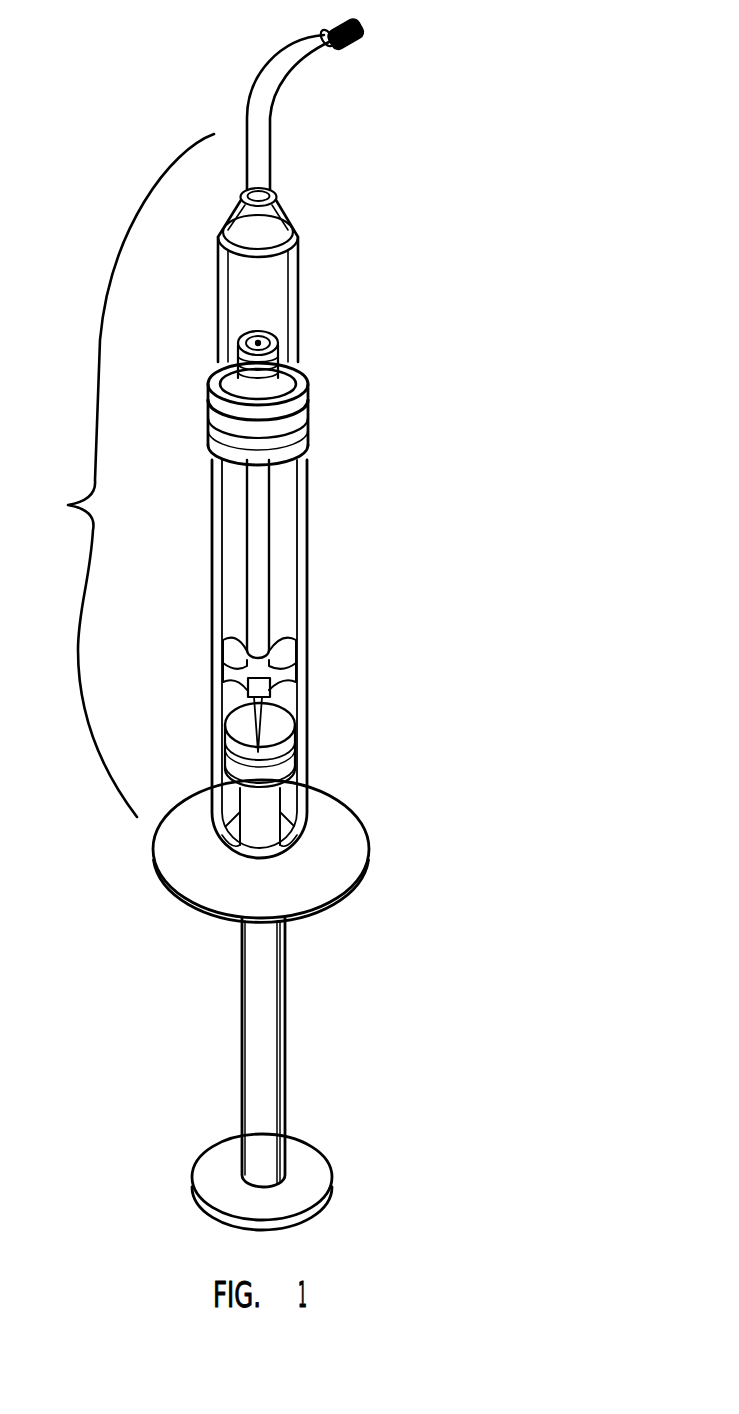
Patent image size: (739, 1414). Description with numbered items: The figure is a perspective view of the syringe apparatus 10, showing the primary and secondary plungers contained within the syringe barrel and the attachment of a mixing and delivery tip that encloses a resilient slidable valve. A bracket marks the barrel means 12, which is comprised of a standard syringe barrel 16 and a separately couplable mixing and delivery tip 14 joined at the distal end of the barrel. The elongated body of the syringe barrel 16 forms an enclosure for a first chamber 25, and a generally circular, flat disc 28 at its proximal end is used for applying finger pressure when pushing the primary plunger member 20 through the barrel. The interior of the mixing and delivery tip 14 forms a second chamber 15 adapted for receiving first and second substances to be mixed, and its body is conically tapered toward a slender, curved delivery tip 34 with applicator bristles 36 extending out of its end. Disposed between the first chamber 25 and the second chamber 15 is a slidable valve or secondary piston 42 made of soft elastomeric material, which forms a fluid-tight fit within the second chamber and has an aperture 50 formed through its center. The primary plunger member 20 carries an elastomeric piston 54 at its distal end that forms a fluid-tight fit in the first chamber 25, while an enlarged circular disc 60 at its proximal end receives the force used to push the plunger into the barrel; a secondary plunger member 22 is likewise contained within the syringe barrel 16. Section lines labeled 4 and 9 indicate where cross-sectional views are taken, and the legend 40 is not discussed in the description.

The section line 4- 4 is at (257, 112).
The section line 9- 9 is at (348, 747).
The syringe apparatus 10 is at (370, 627).
The barrel means 12 is at (124, 475).
The mixing and delivery tip 14 is at (306, 316).
The second chamber 15 is at (270, 290).
The syringe barrel 16 is at (310, 592).
The primary plunger member 20 is at (297, 1058).
The secondary plunger member 22 is at (238, 578).
The first chamber 25 is at (285, 515).
The flat disc 28 is at (332, 878).
The delivery tip 34 is at (265, 115).
The applicator bristles 36 is at (352, 41).
The coupling collar 40 is at (321, 371).
The slidable valve or secondary piston 42 is at (318, 391).
The aperture 50 is at (261, 343).
The elastomeric piston 54 is at (287, 760).
The enlarged circular disc 60 is at (313, 1167).